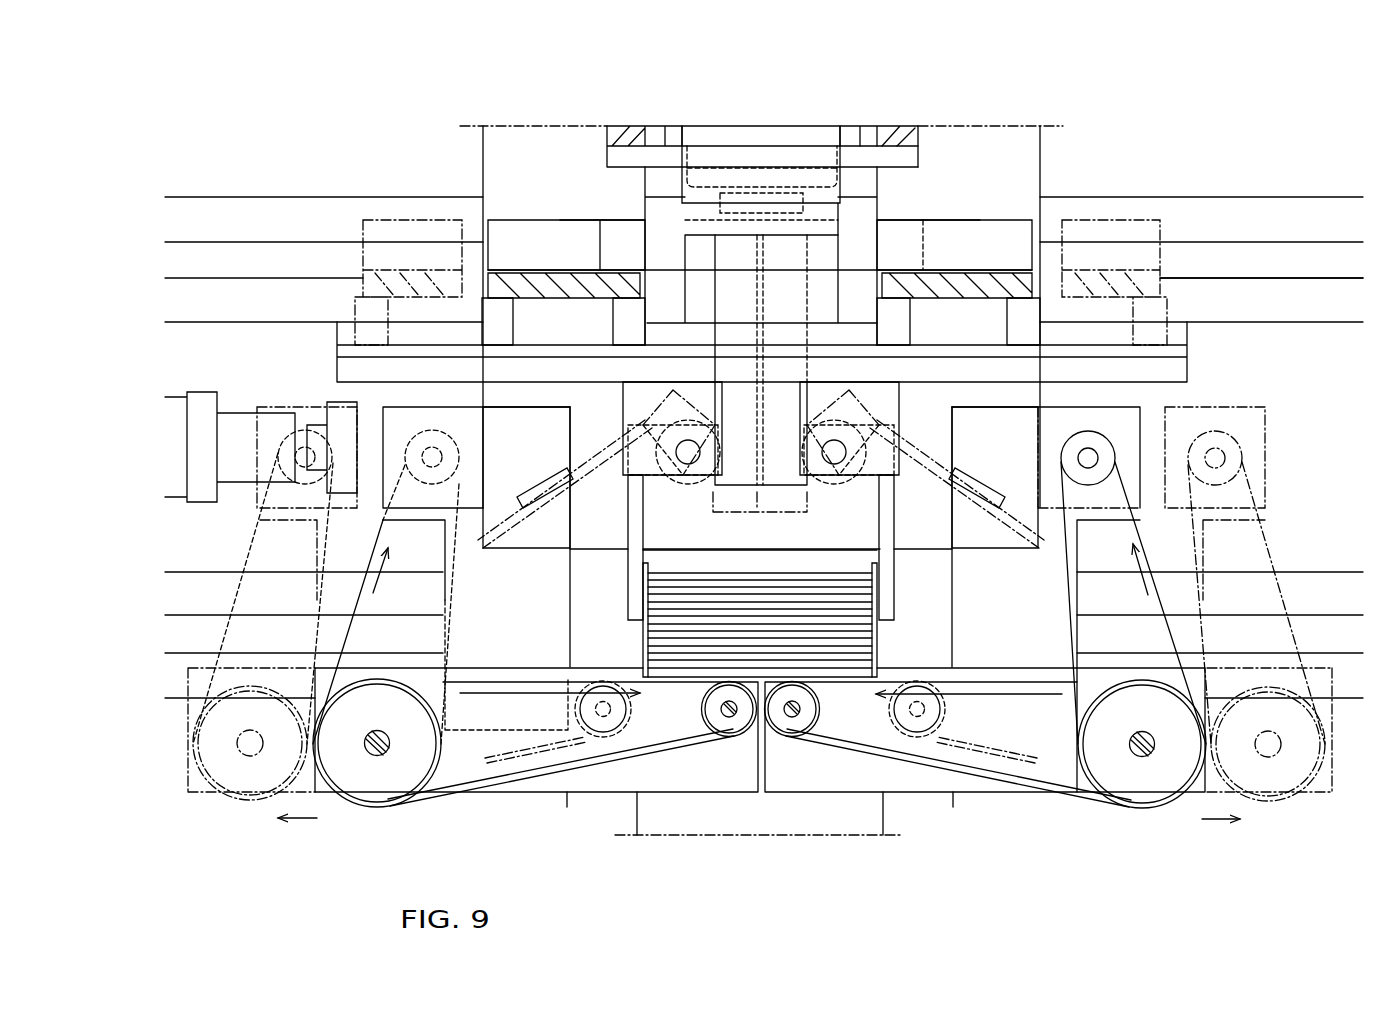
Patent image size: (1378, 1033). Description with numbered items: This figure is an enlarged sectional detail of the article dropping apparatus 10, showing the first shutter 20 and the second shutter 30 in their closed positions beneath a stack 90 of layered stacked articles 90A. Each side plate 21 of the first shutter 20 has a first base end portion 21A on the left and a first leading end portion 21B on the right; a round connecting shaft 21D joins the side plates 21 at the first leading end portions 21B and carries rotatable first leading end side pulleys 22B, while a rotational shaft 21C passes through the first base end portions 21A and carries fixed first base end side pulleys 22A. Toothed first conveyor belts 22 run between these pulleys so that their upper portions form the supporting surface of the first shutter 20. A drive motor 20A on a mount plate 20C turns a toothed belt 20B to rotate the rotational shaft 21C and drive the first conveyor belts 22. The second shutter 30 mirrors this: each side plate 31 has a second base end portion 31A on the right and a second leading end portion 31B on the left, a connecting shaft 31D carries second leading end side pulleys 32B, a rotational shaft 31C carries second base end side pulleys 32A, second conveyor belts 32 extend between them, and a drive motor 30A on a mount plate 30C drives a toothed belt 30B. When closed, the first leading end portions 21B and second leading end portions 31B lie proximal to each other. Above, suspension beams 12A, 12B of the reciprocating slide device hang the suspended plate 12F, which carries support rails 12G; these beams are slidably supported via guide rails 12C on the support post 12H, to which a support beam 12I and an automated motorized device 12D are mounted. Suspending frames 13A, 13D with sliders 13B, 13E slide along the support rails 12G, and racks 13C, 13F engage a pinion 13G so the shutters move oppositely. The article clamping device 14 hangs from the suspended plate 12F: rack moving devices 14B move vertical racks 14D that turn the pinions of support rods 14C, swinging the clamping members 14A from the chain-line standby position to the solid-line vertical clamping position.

The article dropping apparatus 10 is at (472, 86).
The suspension beam 12A is at (623, 130).
The suspension beam 12B is at (900, 130).
The guide rail 12C is at (1262, 260).
The automated motorized device 12D is at (175, 413).
The suspended plate 12F is at (933, 370).
The support rail 12G is at (1175, 345).
The support post 12H is at (763, 817).
The support beam 12I is at (1320, 383).
The suspending frame 13A is at (530, 278).
The slider 13B is at (497, 315).
The rack 13C is at (545, 235).
The suspending frame 13D is at (990, 278).
The slider 13E is at (1025, 315).
The rack 13F is at (977, 240).
The pinion 13G is at (790, 250).
The article clamping device 14 is at (799, 300).
The clamping member 14A is at (633, 563).
The rack moving device 14B is at (725, 153).
The support rod 14C is at (688, 440).
The vertical rack 14D is at (780, 430).
The first shutter 20 is at (528, 768).
The drive motor 20A is at (393, 435).
The toothed belt 20B is at (373, 550).
The mount plate 20C is at (507, 443).
The side plate 21 is at (570, 790).
The first base end portion 21A is at (322, 788).
The first leading end portion 21B is at (733, 773).
The rotational shaft 21C is at (387, 752).
The connecting shaft 21D is at (723, 712).
The first conveyor belt 22 is at (612, 763).
The first base end side pulley 22A is at (370, 788).
The first leading end side pulley 22B is at (727, 725).
The second shutter 30 is at (990, 770).
The drive motor 30A is at (1127, 437).
The toothed belt 30B is at (1150, 557).
The mount plate 30C is at (1015, 445).
The side plate 31 is at (953, 790).
The second base end portion 31A is at (1197, 788).
The second leading end portion 31B is at (788, 773).
The rotational shaft 31C is at (1133, 748).
The connecting shaft 31D is at (799, 712).
The second conveyor belt 32 is at (908, 767).
The second base end side pulley 32A is at (1150, 785).
The second leading end side pulley 32B is at (795, 725).
The stack 90 is at (851, 623).
The stacked article 90A is at (657, 600).